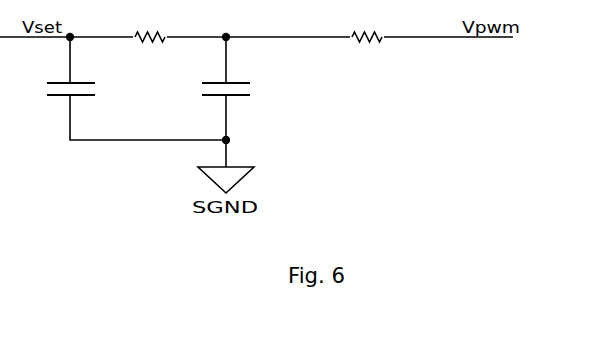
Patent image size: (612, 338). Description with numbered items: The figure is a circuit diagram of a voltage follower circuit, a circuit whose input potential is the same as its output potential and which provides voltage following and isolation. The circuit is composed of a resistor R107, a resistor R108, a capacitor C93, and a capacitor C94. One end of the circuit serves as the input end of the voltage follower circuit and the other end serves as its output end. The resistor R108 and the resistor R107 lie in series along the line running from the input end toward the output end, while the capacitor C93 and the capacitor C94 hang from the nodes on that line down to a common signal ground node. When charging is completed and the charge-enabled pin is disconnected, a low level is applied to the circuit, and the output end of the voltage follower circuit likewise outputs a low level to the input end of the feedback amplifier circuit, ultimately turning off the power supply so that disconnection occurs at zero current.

The resistor R107 is at (167, 37).
The resistor R108 is at (386, 37).
The capacitor C93 is at (92, 102).
The capacitor C94 is at (247, 102).